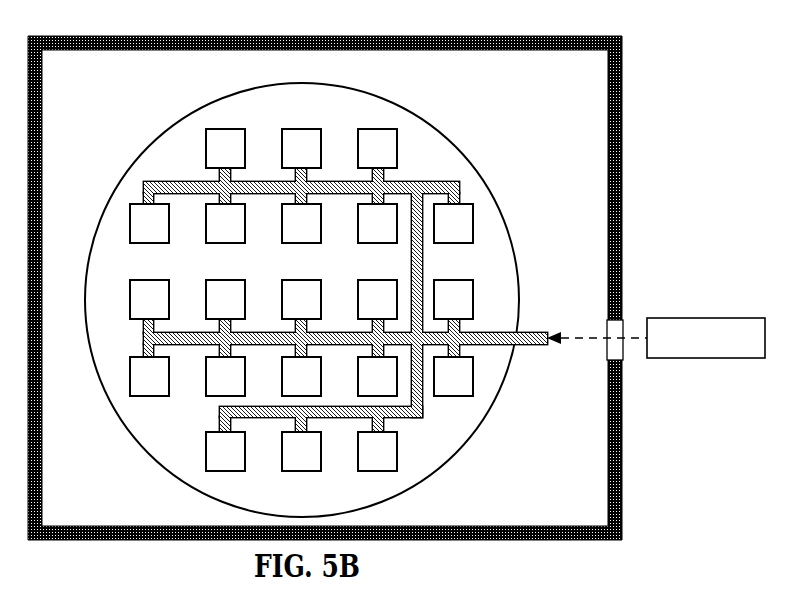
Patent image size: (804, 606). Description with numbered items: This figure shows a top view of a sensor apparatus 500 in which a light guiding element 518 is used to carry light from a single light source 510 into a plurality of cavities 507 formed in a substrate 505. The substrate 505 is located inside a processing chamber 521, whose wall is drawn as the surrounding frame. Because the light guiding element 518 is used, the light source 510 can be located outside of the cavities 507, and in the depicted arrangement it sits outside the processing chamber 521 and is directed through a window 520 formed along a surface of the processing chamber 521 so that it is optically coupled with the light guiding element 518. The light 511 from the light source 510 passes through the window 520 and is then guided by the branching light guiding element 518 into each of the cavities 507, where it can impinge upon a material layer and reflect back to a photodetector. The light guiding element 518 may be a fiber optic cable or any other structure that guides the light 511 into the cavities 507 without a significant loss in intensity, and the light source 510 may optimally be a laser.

The sensor apparatus 500 is at (622, 31).
The substrate 505 is at (168, 450).
The cavity 507 is at (143, 213).
The light source 510 is at (720, 349).
The light 511 is at (582, 338).
The light guiding element 518 is at (459, 188).
The window 520 is at (623, 322).
The processing chamber 521 is at (623, 175).